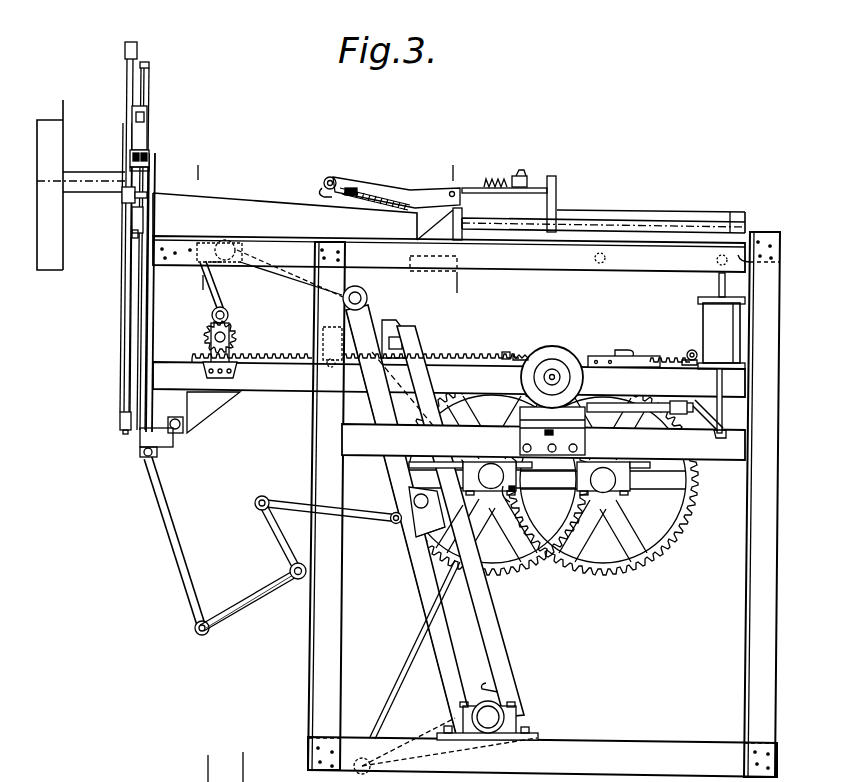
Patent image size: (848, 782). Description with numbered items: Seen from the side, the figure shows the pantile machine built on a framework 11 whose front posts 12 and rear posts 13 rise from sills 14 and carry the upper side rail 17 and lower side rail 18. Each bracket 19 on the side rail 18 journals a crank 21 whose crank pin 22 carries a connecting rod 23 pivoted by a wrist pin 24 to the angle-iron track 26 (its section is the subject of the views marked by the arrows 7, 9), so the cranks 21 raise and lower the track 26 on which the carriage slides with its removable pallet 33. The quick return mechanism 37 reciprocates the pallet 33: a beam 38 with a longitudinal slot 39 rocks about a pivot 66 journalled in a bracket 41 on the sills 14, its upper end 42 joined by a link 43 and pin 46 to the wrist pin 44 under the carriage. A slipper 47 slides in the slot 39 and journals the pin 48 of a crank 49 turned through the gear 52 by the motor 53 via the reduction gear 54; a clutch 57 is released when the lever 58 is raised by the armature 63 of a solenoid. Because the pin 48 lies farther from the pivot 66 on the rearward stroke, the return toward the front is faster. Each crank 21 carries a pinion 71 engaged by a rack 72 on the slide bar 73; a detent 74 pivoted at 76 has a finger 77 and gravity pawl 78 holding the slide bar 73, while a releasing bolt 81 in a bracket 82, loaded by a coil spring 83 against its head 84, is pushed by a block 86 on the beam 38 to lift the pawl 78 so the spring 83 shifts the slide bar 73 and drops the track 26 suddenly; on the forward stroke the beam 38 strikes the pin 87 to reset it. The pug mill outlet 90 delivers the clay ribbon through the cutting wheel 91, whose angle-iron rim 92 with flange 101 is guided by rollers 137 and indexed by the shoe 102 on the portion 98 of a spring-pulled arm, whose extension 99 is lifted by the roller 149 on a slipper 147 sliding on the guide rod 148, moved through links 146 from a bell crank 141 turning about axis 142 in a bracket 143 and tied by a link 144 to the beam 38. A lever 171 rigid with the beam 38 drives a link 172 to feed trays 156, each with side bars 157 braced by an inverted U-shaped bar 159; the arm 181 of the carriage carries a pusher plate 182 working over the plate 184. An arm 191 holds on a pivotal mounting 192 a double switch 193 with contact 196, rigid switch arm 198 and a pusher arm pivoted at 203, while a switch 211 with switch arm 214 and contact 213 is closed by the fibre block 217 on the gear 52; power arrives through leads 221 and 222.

The framework 11 is at (274, 717).
The front posts 12 is at (309, 687).
The rear posts 13 is at (760, 680).
The sills 14 is at (630, 748).
The upper side rail 17 is at (640, 258).
The lower side rail 18 is at (270, 393).
The bracket 19 is at (213, 351).
The crank 21 is at (211, 318).
The crank pin 22 is at (227, 311).
The connecting rod 23 is at (203, 268).
The wrist pin 24 is at (207, 240).
The track 26 is at (696, 220).
The pallet 33 is at (276, 200).
The quick return mechanism 37 is at (396, 620).
The beam 38 is at (503, 652).
The slot 39 is at (498, 690).
The bracket 41 is at (528, 727).
The upper end of beam 42 is at (366, 312).
The link 43 is at (290, 288).
The wrist pin 44 is at (226, 271).
The pin 46 is at (364, 296).
The slipper 47 is at (425, 525).
The pin 48 is at (414, 500).
The crank 49 is at (466, 512).
The gear 52 is at (536, 564).
The motor 53 is at (548, 348).
The reduction gear 54 is at (664, 556).
The clutch 57 is at (516, 489).
The lever 58 is at (709, 426).
The armature 63 is at (702, 409).
The pivot 66 is at (490, 722).
The pinion 71 is at (231, 333).
The rack 72 is at (268, 356).
The slide bar 73 is at (461, 362).
The detent 74 is at (675, 333).
The pivot of detent 76 is at (704, 308).
The finger 77 is at (684, 358).
The pawl 78 is at (690, 350).
The releasing bolt 81 is at (622, 350).
The bracket 82 is at (597, 355).
The coil spring 83 is at (522, 355).
The head 84 is at (506, 352).
The block 86 is at (396, 342).
The pin 87 is at (395, 398).
The outlet 90 is at (70, 172).
The cutting wheel 91 is at (161, 114).
The rim 92 is at (151, 74).
The rim-engaging portion 98 is at (132, 222).
The extension 99 is at (130, 153).
The flange 101 is at (140, 62).
The shoe 102 is at (134, 235).
The rollers 137 is at (120, 420).
The bell crank 141 is at (248, 608).
The axis 142 is at (291, 572).
The bracket 143 is at (250, 600).
The link 144 is at (276, 506).
The links 146 is at (170, 540).
The slipper 147 is at (122, 198).
The guide rod 148 is at (122, 316).
The roller 149 is at (151, 158).
The tray 156 is at (596, 224).
The side bars 157 is at (714, 233).
The inverted U-shaped bar 159 is at (553, 187).
The lever 171 is at (431, 724).
The link 172 is at (395, 685).
The arm 181 is at (458, 284).
The pusher plate 182 is at (463, 230).
The plate 184 is at (770, 262).
The arm 191 is at (395, 186).
The pivotal mounting 192 is at (332, 178).
The double switch 193 is at (365, 210).
The contact 196 is at (493, 178).
The rigid switch arm 198 is at (512, 180).
The pivot of pusher arm 203 is at (313, 193).
The switch 211 is at (587, 470).
The contact 213 is at (530, 440).
The switch arm 214 is at (532, 506).
The fibre block 217 is at (522, 472).
The lead 221 is at (208, 765).
The lead 222 is at (244, 762).
The section line 7 is at (453, 173).
The section line 9 is at (192, 178).